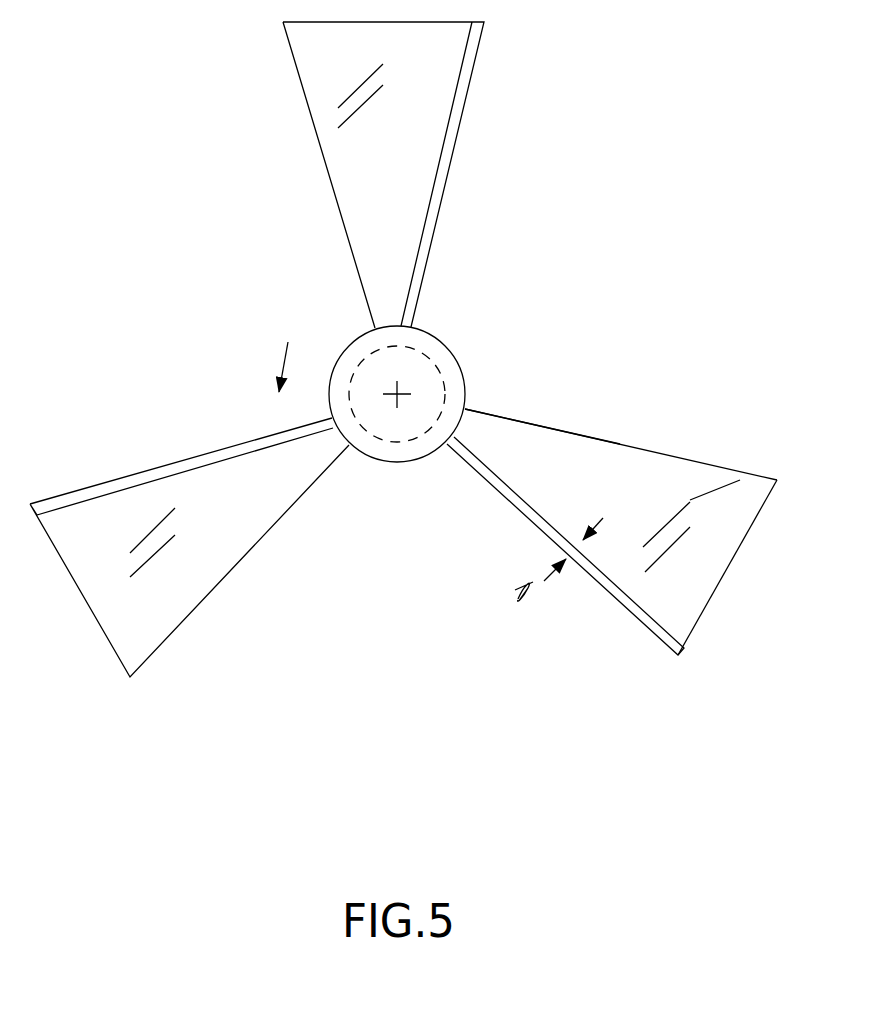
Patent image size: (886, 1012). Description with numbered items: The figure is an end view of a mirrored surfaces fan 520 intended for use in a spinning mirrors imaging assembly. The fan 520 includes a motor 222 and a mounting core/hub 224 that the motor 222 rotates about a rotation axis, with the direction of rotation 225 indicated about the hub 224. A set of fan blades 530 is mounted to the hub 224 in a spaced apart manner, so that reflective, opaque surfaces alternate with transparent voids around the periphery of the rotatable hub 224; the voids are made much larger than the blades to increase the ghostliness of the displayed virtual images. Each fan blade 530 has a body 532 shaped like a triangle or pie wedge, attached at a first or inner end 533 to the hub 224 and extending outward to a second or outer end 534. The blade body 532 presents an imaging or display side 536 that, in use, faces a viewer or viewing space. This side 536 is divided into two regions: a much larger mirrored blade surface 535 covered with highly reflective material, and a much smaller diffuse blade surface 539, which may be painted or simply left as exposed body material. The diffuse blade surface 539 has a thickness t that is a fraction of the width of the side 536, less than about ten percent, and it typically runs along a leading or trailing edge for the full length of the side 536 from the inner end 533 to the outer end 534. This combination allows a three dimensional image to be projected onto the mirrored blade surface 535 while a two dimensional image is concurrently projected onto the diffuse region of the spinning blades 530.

The mirrored surfaces fan 520 is at (173, 162).
The motor 222 is at (342, 358).
The mounting core/hub 224 is at (378, 462).
The direction of rotation 225 is at (283, 367).
The fan blade 530 is at (748, 597).
The blade body 532 is at (603, 433).
The inner end 533 is at (470, 412).
The outer end 534 is at (765, 505).
The mirrored blade surface 535 is at (728, 493).
The imaging or display side 536 is at (673, 480).
The diffuse blade surface 539 is at (683, 665).